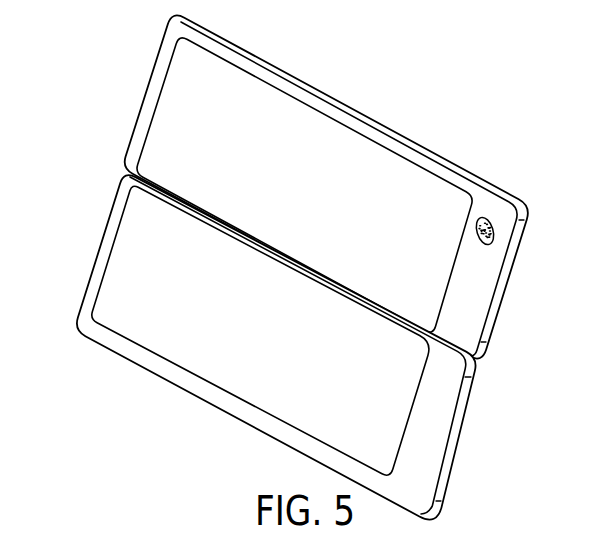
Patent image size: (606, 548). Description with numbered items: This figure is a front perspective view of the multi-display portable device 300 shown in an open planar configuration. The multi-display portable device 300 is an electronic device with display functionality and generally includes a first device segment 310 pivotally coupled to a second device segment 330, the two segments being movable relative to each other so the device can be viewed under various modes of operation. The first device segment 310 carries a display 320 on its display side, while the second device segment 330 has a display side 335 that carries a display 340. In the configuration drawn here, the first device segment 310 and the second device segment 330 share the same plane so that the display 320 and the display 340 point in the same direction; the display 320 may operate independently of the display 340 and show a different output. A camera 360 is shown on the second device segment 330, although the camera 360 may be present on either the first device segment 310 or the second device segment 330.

The multi-display portable device 300 is at (336, 186).
The first device segment 310 is at (90, 272).
The display 320 is at (92, 309).
The second device segment 330 is at (524, 226).
The display side 335 is at (147, 90).
The display 340 is at (176, 46).
The camera 360 is at (493, 236).